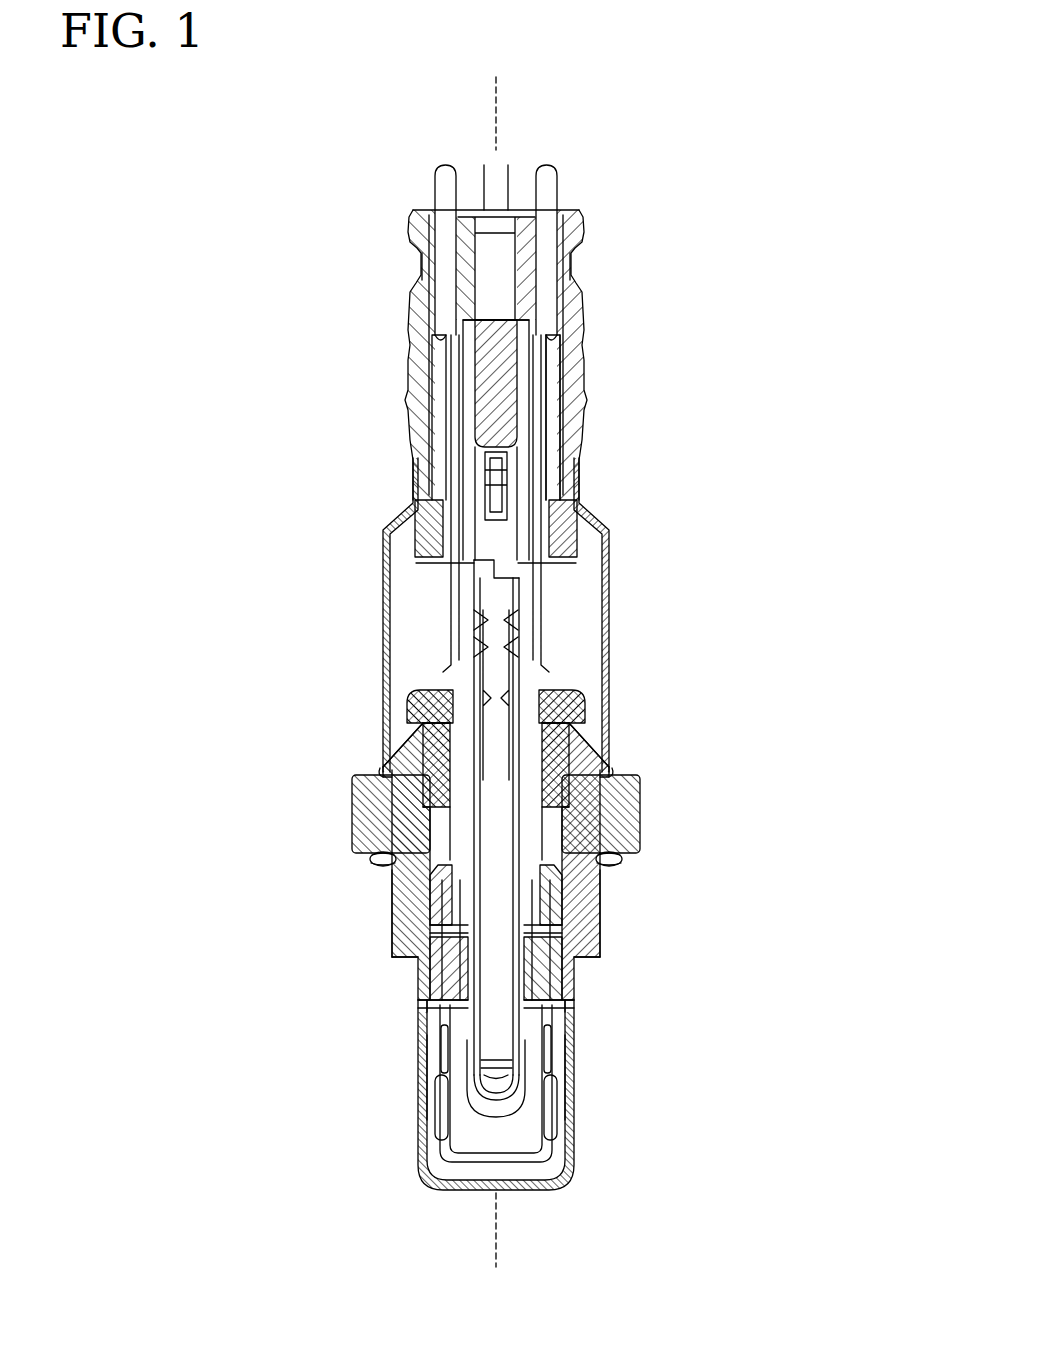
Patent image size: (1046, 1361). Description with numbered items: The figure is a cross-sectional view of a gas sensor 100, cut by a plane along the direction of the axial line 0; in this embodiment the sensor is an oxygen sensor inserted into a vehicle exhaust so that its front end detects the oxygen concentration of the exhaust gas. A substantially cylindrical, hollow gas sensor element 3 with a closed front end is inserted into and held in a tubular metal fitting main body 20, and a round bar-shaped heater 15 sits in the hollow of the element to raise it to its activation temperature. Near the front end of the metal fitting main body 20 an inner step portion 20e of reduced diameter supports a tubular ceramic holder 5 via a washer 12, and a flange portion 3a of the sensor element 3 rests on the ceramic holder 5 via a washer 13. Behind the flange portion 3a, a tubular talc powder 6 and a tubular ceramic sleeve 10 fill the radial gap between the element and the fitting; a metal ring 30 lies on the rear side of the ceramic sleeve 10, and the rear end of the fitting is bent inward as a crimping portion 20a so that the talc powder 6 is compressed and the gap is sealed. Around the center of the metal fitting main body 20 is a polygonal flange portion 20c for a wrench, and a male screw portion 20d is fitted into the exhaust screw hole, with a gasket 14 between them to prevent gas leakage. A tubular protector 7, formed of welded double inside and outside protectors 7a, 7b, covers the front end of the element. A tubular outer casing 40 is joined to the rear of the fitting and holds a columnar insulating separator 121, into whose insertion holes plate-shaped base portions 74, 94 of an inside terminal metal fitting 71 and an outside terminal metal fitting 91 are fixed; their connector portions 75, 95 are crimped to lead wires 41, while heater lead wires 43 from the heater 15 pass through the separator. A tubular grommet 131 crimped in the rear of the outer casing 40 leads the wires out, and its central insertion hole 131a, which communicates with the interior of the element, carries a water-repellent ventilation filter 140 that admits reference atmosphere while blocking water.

The gas sensor 100 is at (201, 593).
The axial line 0 is at (498, 101).
The gas sensor element 3 is at (530, 648).
The flange portion 3a is at (600, 888).
The ceramic holder 5 is at (400, 905).
The talc powder 6 is at (353, 822).
The protector 7 is at (512, 1237).
The inside protector 7a is at (534, 1192).
The outside protector 7b is at (573, 1193).
The ceramic sleeve 10 is at (384, 768).
The washer 12 is at (400, 937).
The washer 13 is at (425, 965).
The gasket 14 is at (372, 859).
The heater 15 is at (500, 1057).
The metal fitting main body 20 is at (269, 803).
The crimping portion 20a is at (540, 693).
The flange portion 20c is at (640, 812).
The male screw portion 20d is at (600, 918).
The step portion 20e is at (605, 945).
The metal ring 30 is at (410, 705).
The outer casing 40 is at (385, 635).
The lead wires 41 is at (444, 170).
The heater lead wires 43 is at (490, 170).
The inside terminal metal fitting 71 is at (530, 612).
The plate-shaped base portion 74 is at (540, 402).
The connector portion 75 is at (530, 369).
The outside terminal metal fitting 91 is at (448, 586).
The plate-shaped base portion 94 is at (420, 402).
The connector portion 95 is at (445, 362).
The insulating separator 121 is at (575, 295).
The grommet 131 is at (420, 270).
The insertion hole 131a is at (411, 221).
The water-repellent ventilation filter 140 is at (472, 208).